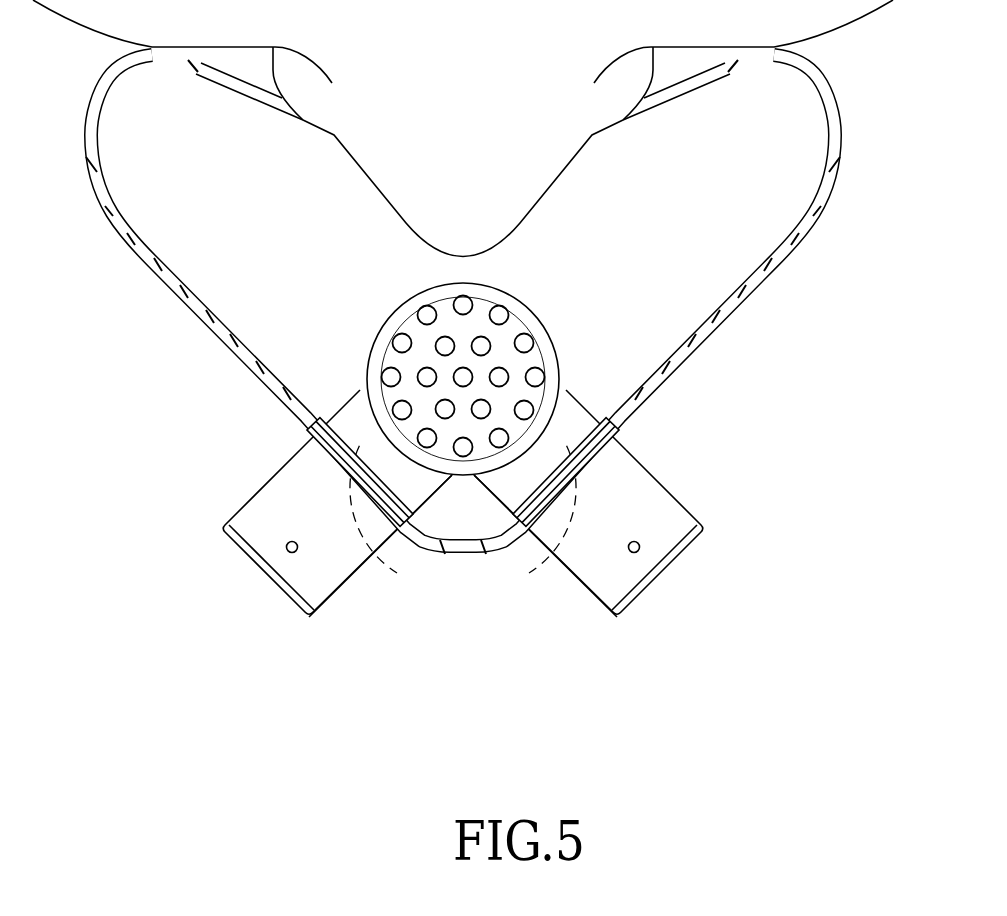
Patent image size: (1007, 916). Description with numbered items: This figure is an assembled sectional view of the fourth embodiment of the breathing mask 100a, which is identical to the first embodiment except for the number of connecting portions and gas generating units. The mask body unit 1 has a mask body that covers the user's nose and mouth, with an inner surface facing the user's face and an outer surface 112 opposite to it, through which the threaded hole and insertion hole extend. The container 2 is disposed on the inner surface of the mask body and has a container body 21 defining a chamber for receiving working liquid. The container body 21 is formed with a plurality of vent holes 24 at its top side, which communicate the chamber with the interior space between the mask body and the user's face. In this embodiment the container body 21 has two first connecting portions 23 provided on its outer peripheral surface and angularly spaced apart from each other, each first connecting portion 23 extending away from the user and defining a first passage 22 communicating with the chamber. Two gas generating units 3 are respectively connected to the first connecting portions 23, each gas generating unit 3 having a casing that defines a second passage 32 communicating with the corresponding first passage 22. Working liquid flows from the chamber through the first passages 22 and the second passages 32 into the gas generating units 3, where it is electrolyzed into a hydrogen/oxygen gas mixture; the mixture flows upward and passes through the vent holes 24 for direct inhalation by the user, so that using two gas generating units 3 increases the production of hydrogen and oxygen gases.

The mask body unit 1 is at (431, 304).
The outer surface 112 is at (148, 259).
The breathing mask 100a is at (744, 316).
The container 2 is at (468, 466).
The container body 21 is at (398, 310).
The first passage 22 is at (336, 461).
The first connecting portion 23 is at (338, 399).
The vent holes 24 is at (498, 305).
The gas generating unit 3 is at (246, 568).
The second passage 32 is at (463, 530).